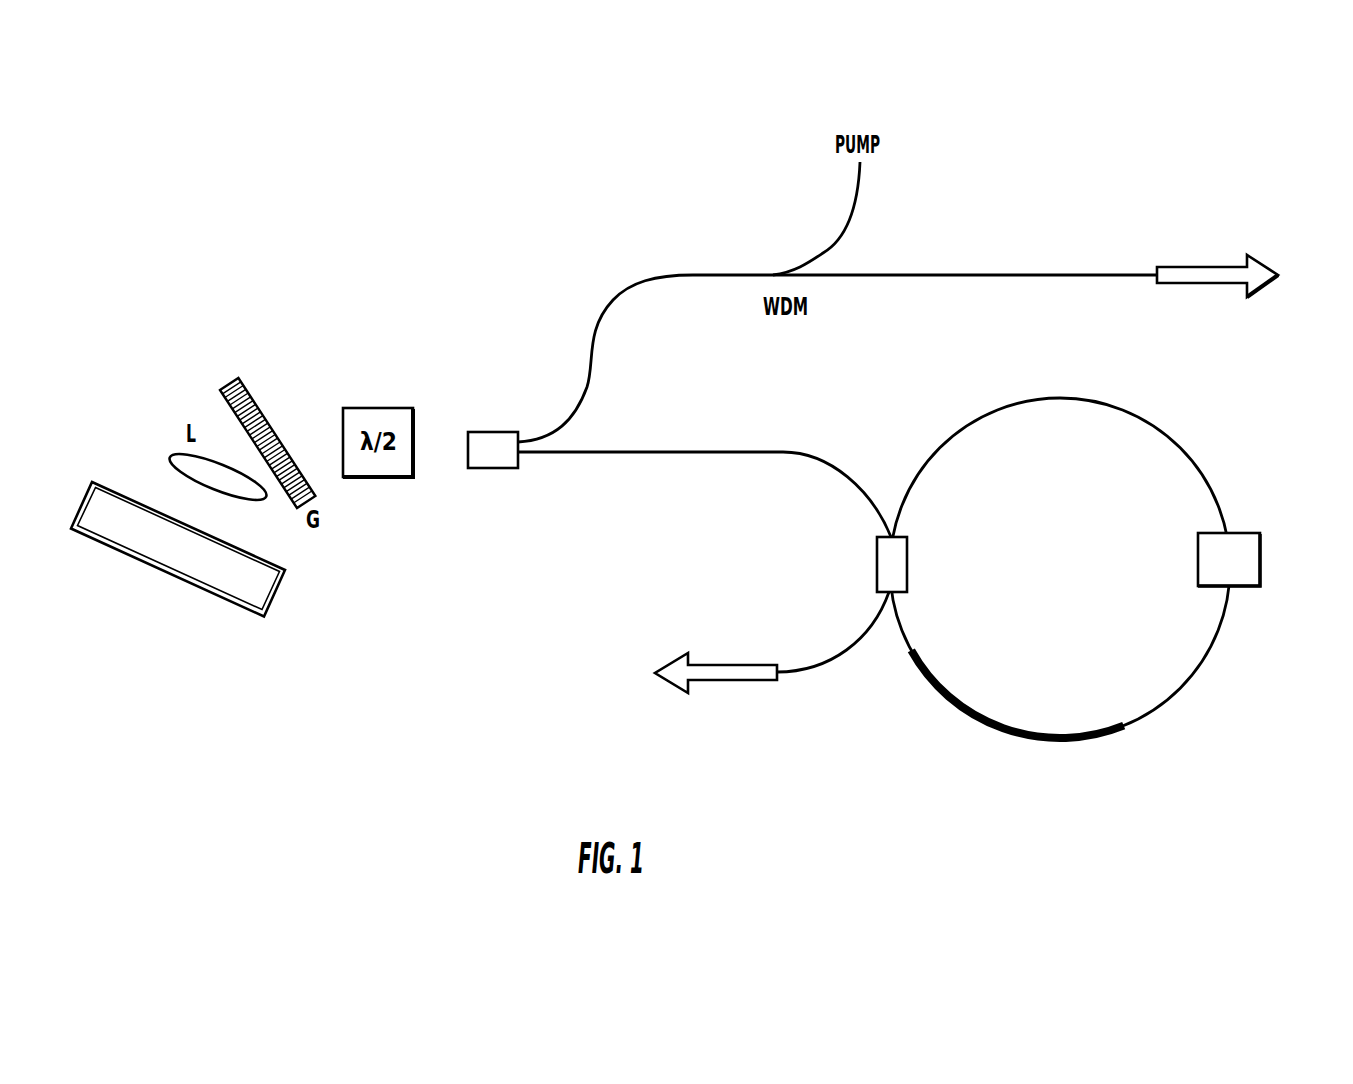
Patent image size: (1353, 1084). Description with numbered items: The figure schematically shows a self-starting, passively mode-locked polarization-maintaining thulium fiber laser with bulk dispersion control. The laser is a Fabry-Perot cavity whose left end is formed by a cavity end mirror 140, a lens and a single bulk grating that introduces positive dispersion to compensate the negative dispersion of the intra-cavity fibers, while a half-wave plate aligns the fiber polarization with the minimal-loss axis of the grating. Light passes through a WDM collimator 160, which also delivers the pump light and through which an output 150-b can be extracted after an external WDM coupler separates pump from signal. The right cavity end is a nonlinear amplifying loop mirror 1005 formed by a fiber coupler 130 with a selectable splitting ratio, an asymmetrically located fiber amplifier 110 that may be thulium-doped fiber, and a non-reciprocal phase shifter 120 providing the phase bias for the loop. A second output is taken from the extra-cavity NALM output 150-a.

The fiber amplifier 110 is at (958, 710).
The non-reciprocal phase shifter 120 is at (1260, 553).
The fiber coupler 130 is at (877, 560).
The cavity end mirror 140 is at (277, 600).
The extra-cavity NALM output 150-a is at (655, 698).
The output 150-b is at (1259, 238).
The WDM collimator 160 is at (500, 418).
The nonlinear amplifying loop mirror 1005 is at (1237, 698).